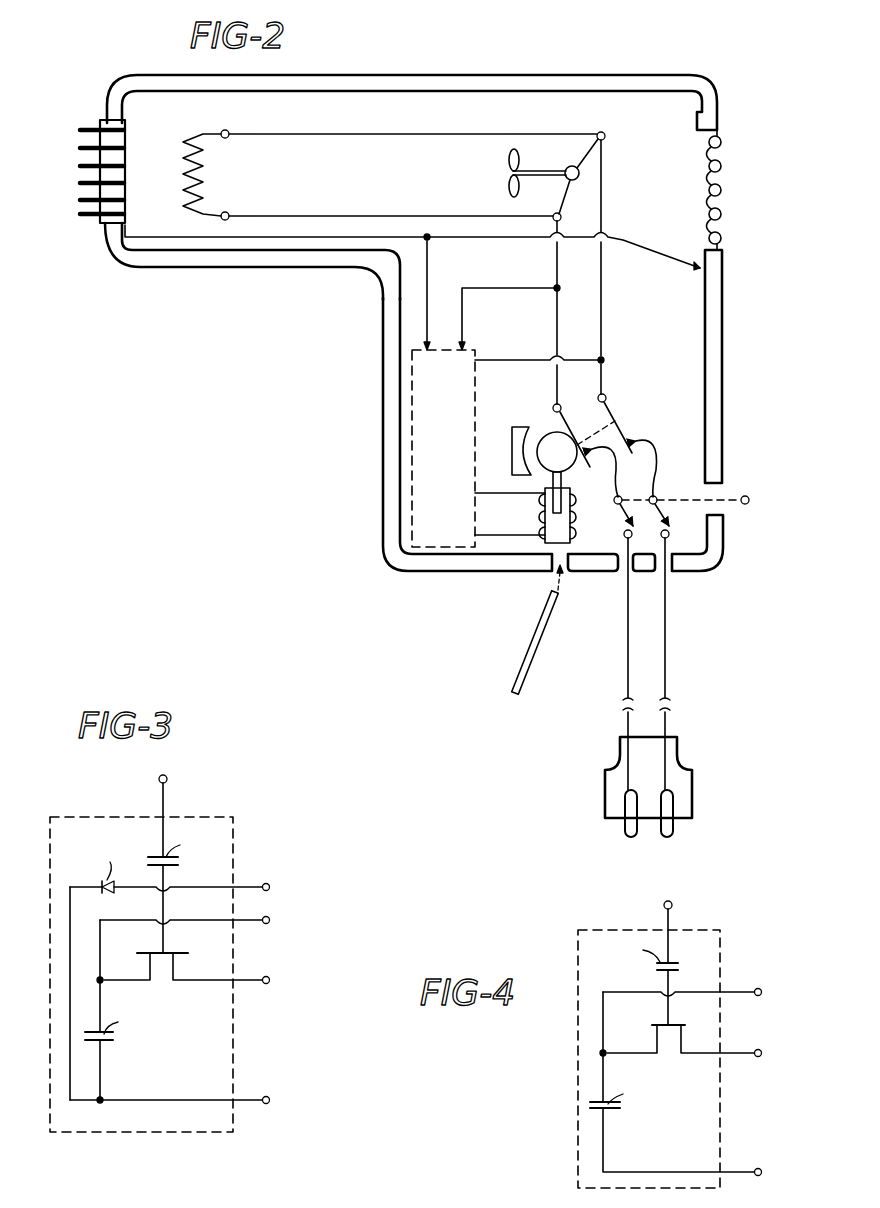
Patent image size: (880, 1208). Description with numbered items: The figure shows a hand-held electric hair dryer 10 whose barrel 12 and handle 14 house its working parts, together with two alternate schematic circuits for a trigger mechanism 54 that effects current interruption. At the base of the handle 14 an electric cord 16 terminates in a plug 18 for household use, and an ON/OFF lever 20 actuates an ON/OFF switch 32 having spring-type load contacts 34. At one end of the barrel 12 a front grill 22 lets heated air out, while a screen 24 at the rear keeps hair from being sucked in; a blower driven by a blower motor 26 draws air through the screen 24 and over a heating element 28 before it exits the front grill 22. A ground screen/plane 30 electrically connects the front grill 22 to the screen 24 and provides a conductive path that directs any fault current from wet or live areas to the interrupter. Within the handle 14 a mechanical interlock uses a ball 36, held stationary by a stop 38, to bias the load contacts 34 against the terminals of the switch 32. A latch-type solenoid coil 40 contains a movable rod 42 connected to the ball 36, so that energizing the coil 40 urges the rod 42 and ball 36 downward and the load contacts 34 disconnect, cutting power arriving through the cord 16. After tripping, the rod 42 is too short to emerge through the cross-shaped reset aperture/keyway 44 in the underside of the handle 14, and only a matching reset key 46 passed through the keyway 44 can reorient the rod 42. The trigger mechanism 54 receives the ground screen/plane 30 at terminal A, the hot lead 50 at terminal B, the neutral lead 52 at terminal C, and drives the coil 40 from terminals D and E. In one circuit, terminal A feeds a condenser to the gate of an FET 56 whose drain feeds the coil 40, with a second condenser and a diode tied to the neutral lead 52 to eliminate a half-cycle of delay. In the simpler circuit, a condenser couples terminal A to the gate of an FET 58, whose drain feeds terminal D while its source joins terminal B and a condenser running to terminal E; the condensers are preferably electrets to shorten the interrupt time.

In FIG. 2, the hair dryer 10 is at (414, 323).
In FIG. 2, the barrel 12 is at (232, 270).
In FIG. 2, the handle 14 is at (383, 436).
In FIG. 2, the electric cord 16 is at (668, 645).
In FIG. 2, the plug 18 is at (605, 778).
In FIG. 2, the ON/OFF lever 20 is at (745, 496).
In FIG. 2, the front grill 22 is at (93, 118).
In FIG. 2, the screen 24 is at (721, 142).
In FIG. 2, the blower motor 26 is at (527, 178).
In FIG. 2, the heating element 28 is at (200, 135).
In FIG. 2, the ground screen/plane 30 is at (183, 237).
In FIG. 2, the ON/OFF switch 32 is at (656, 470).
In FIG. 2, the load contacts 34 is at (622, 430).
In FIG. 2, the ball 36 is at (550, 432).
In FIG. 2, the stop 38 is at (517, 427).
In FIG. 2, the coil 40 is at (572, 519).
In FIG. 2, the movable rod 42 is at (563, 478).
In FIG. 2, the reset aperture/keyway 44 is at (565, 575).
In FIG. 2, the reset key 46 is at (530, 632).
In FIG. 2, the hot lead 50 is at (556, 312).
In FIG. 2, the neutral lead 52 is at (603, 327).
In FIG. 2, the trigger mechanism 54 is at (437, 493).
In FIG. 3, the trigger mechanism 54 is at (233, 817).
In FIG. 4, the trigger mechanism 54 is at (716, 930).
In FIG. 3, the FET 56 is at (187, 956).
In FIG. 4, the FET 58 is at (690, 1025).